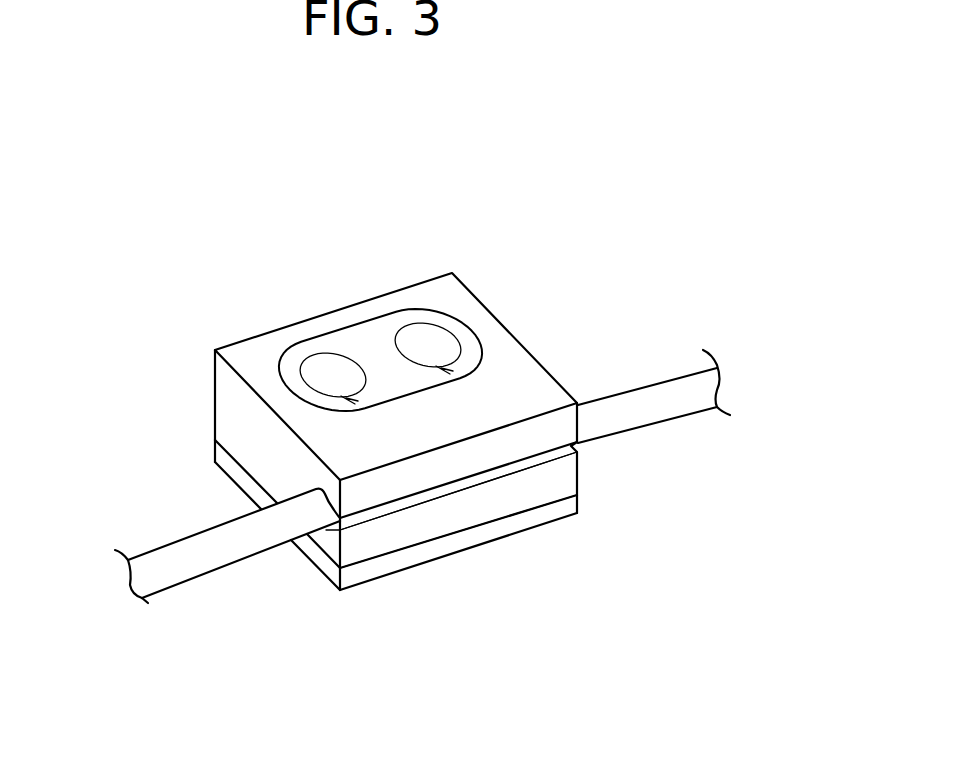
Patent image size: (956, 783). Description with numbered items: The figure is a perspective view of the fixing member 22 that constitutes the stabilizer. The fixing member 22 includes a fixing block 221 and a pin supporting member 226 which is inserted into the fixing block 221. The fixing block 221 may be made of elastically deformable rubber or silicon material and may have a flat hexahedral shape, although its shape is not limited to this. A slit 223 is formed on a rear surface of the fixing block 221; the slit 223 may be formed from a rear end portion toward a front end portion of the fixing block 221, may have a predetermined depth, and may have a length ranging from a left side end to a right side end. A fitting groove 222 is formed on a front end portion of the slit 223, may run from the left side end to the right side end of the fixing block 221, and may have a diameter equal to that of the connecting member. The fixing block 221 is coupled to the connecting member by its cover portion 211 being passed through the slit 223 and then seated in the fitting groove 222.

The fixing member 22 is at (396, 371).
The pin supporting member 226 is at (365, 342).
The cover portion 211 is at (641, 402).
The fixing block 221 is at (396, 554).
The fitting groove 222 is at (343, 488).
The slit 223 is at (488, 482).